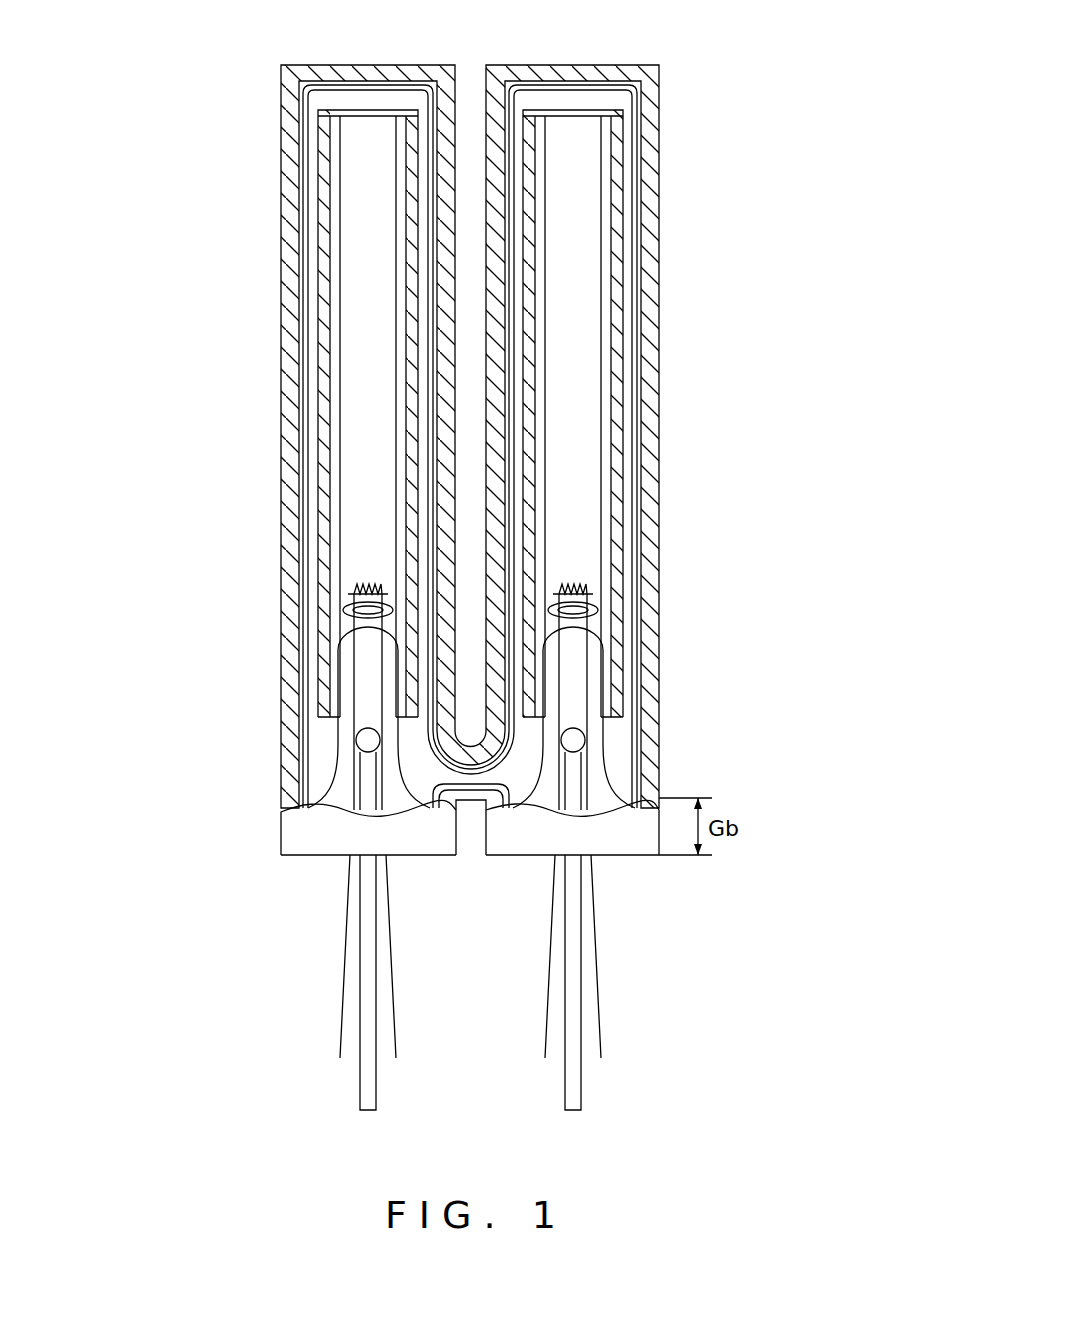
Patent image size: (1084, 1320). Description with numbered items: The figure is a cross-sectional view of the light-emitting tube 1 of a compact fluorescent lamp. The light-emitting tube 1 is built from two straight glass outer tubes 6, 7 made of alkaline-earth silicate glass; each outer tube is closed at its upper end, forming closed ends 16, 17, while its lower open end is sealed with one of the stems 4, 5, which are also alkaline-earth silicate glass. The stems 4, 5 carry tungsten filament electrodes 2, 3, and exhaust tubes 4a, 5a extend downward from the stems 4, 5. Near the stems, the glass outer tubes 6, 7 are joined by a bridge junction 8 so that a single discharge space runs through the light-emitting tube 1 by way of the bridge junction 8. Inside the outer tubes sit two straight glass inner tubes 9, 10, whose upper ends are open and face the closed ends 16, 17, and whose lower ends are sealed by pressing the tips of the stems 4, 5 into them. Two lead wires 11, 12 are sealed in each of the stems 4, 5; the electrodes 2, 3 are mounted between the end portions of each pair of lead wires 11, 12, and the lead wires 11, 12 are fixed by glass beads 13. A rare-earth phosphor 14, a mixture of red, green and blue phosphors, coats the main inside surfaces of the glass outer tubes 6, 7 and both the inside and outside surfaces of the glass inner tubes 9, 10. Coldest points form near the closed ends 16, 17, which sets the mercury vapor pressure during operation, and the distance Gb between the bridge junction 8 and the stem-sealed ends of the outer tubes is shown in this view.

The light-emitting tube 1 is at (665, 218).
The tungsten filament electrode 2 is at (354, 582).
The tungsten filament electrode 3 is at (577, 585).
The stem 4 is at (335, 778).
The exhaust tube 4a is at (360, 1095).
The stem 5 is at (625, 780).
The exhaust tube 5a is at (565, 1095).
The glass outer tube 6 is at (290, 280).
The glass outer tube 7 is at (660, 345).
The bridge junction 8 is at (466, 802).
The glass inner tube 9 is at (325, 210).
The glass inner tube 10 is at (625, 133).
The lead wire 11 is at (346, 968).
The lead wire 12 is at (397, 995).
The glass bead 13 is at (350, 608).
The rare-earth phosphor 14 is at (305, 365).
The closed end of glass outer tube 16 is at (372, 100).
The closed end of glass outer tube 17 is at (572, 100).